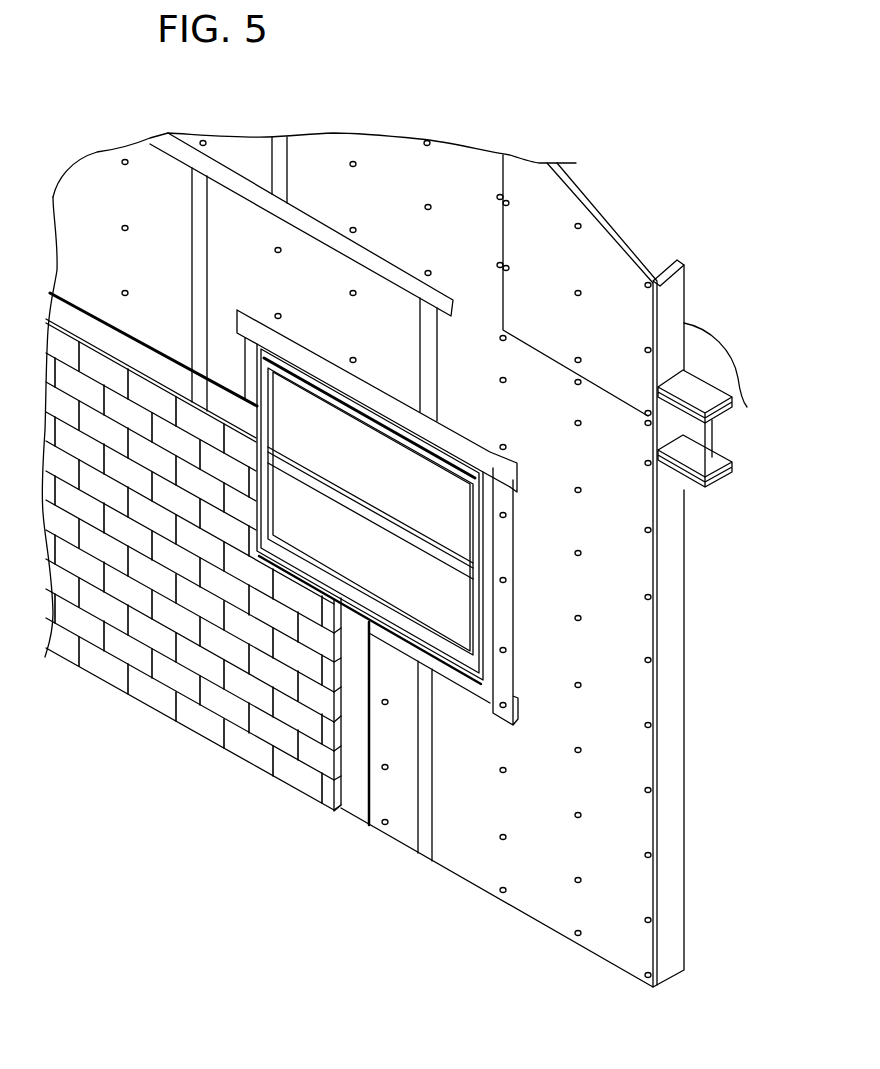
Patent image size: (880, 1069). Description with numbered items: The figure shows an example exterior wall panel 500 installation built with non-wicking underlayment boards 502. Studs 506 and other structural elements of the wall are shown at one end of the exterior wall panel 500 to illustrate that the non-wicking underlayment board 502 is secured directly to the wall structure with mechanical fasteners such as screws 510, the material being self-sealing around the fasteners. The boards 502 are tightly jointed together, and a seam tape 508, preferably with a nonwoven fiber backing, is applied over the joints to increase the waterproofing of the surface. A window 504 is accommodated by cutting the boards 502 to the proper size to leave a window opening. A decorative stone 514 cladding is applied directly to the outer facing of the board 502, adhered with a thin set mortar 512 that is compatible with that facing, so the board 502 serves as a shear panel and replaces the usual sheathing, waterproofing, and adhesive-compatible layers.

The exterior wall panel 500 is at (540, 106).
The non-wicking underlayment board 502 is at (92, 206).
The window 504 is at (437, 550).
The studs 506 is at (668, 303).
The seam tape 508 is at (365, 253).
The fasteners 510 is at (580, 553).
The thin set mortar 512 is at (362, 810).
The decorative stone 514 is at (185, 682).